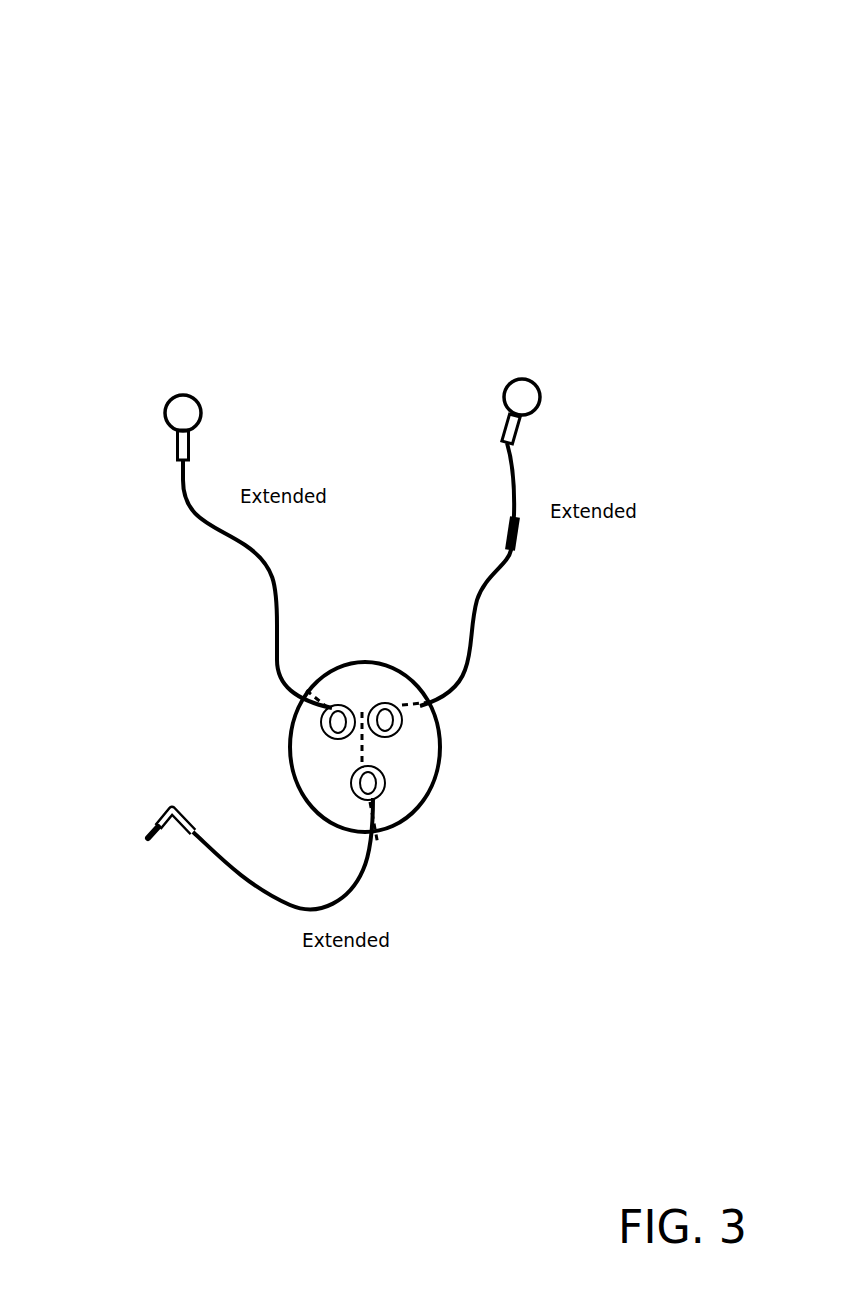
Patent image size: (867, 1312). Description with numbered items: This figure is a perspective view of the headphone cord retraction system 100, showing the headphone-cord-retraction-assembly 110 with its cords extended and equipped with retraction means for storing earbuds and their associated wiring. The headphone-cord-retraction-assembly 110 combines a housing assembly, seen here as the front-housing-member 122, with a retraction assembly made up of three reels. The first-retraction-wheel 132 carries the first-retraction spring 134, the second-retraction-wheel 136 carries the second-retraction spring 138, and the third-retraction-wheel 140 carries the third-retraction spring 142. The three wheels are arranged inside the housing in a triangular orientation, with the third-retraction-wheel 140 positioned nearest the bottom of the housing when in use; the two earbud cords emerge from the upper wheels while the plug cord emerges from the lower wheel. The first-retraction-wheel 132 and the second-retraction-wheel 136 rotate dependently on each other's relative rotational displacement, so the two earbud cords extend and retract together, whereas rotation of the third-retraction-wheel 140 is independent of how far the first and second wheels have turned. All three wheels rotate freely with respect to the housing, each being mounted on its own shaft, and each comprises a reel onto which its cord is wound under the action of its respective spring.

The headphone cord retraction system 100 is at (583, 106).
The headphone-cord-retraction-assembly 110 is at (585, 203).
The front-housing-member 122 is at (427, 790).
The first-retraction-wheel 132 is at (396, 722).
The first-retraction spring 134 is at (392, 699).
The second-retraction-wheel 136 is at (318, 728).
The second-retraction spring 138 is at (326, 741).
The third-retraction-wheel 140 is at (379, 796).
The third-retraction spring 142 is at (358, 806).